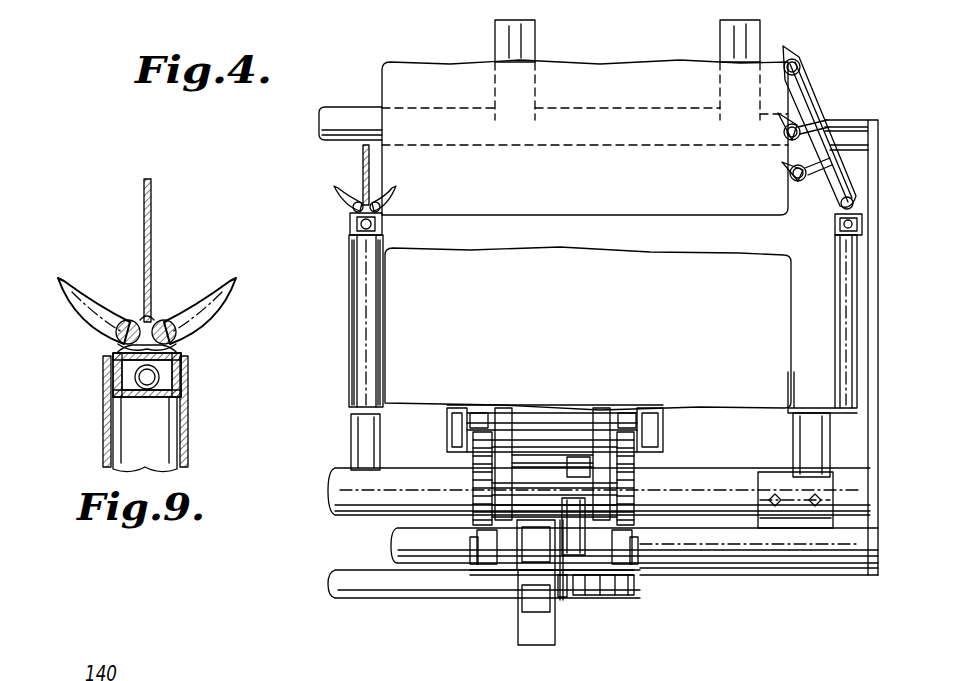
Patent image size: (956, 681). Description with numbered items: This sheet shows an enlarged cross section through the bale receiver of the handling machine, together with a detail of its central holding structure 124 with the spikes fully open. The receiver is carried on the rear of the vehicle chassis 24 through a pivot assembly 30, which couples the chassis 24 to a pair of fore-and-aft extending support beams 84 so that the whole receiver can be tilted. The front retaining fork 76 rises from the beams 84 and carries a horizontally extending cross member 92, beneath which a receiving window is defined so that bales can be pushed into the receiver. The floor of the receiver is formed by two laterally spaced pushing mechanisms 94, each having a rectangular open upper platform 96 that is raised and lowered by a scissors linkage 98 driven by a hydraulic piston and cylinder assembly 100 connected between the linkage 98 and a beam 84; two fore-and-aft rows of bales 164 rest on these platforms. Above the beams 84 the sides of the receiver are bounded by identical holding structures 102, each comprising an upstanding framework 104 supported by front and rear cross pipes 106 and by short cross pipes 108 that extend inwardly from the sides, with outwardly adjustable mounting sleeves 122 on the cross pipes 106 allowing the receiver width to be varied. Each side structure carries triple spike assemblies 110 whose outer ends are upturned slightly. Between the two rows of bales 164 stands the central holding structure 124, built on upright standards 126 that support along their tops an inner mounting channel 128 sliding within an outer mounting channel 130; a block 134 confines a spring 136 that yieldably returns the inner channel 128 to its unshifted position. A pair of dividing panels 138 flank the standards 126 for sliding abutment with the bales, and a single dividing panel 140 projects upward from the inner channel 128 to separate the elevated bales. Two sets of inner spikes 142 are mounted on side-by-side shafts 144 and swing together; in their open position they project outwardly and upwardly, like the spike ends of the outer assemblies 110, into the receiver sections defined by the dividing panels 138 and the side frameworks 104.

In FIG. 4, the chassis 24 is at (536, 633).
In FIG. 4, the pivot assembly 30 is at (563, 593).
In FIG. 4, the front retaining fork 76 is at (866, 117).
In FIG. 4, the support beams 84 is at (530, 568).
In FIG. 4, the cross member 92 is at (344, 106).
In FIG. 4, the pushing mechanism 94 is at (635, 409).
In FIG. 4, the open upper platform 96 is at (443, 413).
In FIG. 4, the scissors linkage 98 is at (508, 440).
In FIG. 4, the hydraulic piston and cylinder assembly 100 is at (620, 500).
In FIG. 4, the holding structure 102 is at (868, 226).
In FIG. 4, the upstanding framework 104 is at (848, 378).
In FIG. 4, the cross pipes 106 is at (335, 483).
In FIG. 4, the short cross pipes 108 is at (867, 498).
In FIG. 4, the triple spike assembly 110 is at (856, 173).
In FIG. 4, the mounting sleeves 122 is at (777, 482).
In FIG. 9, the central holding structure 124 is at (184, 354).
In FIG. 4, the central holding structure 124 is at (348, 210).
In FIG. 9, the upright standards 126 is at (160, 462).
In FIG. 4, the upright standards 126 is at (362, 337).
In FIG. 9, the inner mounting channel 128 is at (117, 355).
In FIG. 9, the outer mounting channel 130 is at (113, 386).
In FIG. 9, the block 134 is at (122, 373).
In FIG. 9, the spring 136 is at (185, 376).
In FIG. 9, the dividing panels 138 is at (103, 447).
In FIG. 4, the dividing panels 138 is at (348, 288).
In FIG. 9, the dividing panel 140 is at (150, 205).
In FIG. 4, the dividing panel 140 is at (362, 158).
In FIG. 9, the inner spikes 142 is at (70, 292).
In FIG. 9, the shafts 144 is at (134, 320).
In FIG. 4, the rows of bales 164 is at (604, 76).